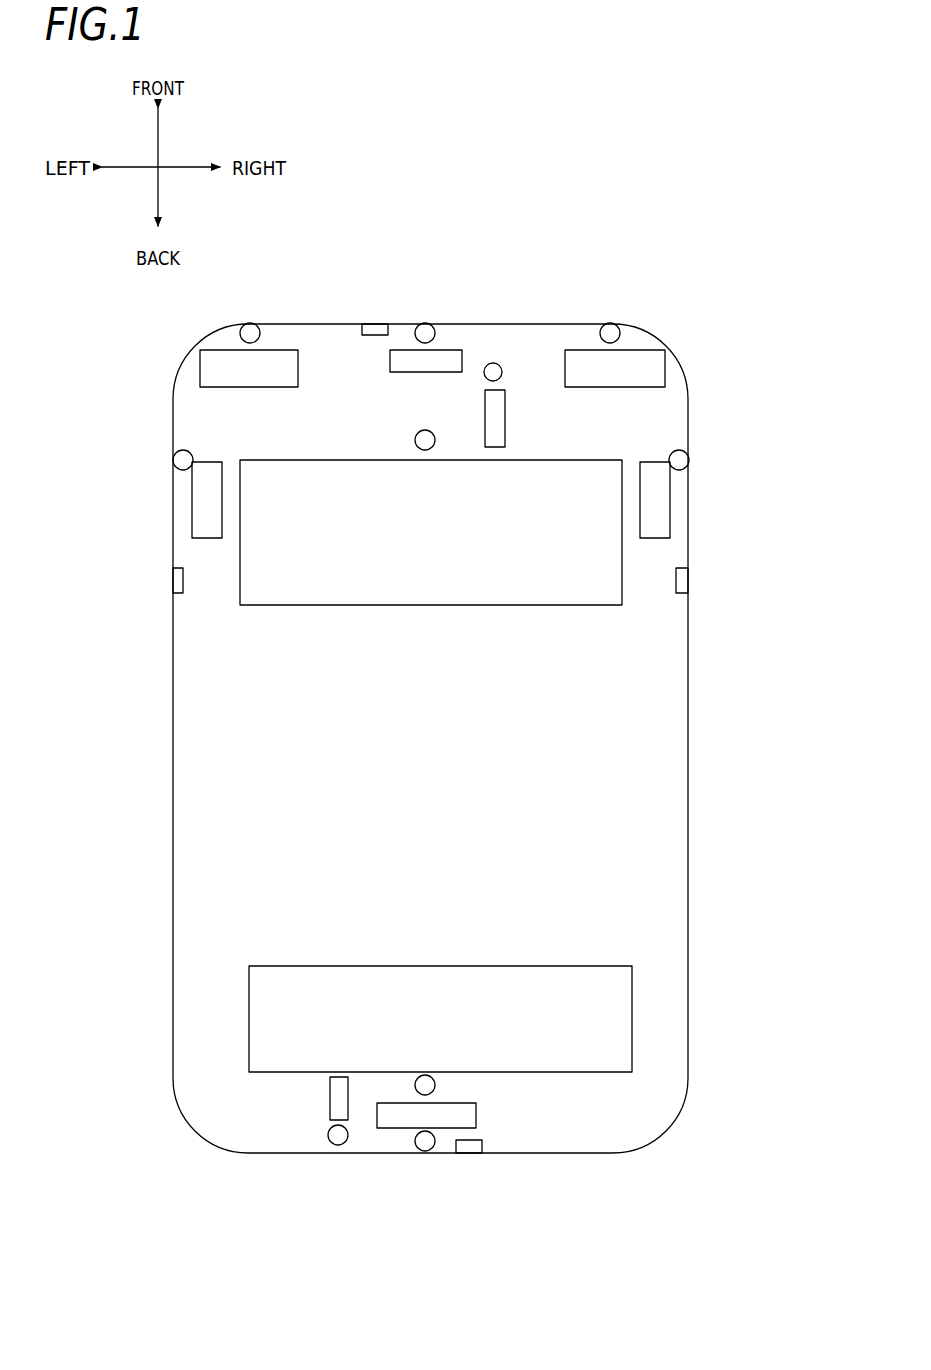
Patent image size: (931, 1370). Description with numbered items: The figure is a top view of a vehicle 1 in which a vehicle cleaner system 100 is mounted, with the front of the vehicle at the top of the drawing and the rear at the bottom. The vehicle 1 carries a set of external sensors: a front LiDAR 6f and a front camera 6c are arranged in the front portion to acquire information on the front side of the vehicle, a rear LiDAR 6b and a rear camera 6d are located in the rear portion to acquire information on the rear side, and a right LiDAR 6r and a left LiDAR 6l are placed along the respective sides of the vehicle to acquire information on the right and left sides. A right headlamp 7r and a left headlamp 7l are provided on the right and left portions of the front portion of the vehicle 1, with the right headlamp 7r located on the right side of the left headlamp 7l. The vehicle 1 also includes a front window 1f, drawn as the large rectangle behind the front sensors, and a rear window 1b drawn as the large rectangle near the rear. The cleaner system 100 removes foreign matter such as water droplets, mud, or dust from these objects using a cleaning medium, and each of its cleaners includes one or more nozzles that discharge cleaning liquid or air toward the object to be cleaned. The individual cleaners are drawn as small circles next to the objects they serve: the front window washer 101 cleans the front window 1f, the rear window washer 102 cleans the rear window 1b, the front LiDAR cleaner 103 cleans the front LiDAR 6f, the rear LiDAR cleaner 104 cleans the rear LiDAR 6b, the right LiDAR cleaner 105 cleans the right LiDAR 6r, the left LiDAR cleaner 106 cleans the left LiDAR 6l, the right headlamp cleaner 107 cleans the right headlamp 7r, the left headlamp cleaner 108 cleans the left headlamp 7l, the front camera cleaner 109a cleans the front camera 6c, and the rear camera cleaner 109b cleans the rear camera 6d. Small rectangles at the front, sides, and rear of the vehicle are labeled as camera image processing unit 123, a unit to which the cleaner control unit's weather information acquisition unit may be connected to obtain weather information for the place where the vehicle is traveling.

The vehicle 1 is at (607, 157).
The vehicle cleaner system 100 is at (496, 233).
The front window 1f is at (612, 553).
The rear window 1b is at (622, 1010).
The front window washer 101 is at (418, 433).
The rear window washer 102 is at (437, 1085).
The front LiDAR cleaner 103 is at (422, 324).
The rear LiDAR cleaner 104 is at (425, 1153).
The right LiDAR cleaner 105 is at (682, 458).
The left LiDAR cleaner 106 is at (180, 452).
The right headlamp cleaner 107 is at (612, 324).
The left headlamp cleaner 108 is at (248, 322).
The front camera cleaner 109a is at (493, 362).
The rear camera cleaner 109b is at (332, 1143).
The front LiDAR 6f is at (459, 350).
The front camera 6c is at (503, 412).
The left LiDAR 6l is at (200, 495).
The right LiDAR 6r is at (665, 500).
The rear camera 6d is at (335, 1098).
The rear LiDAR 6b is at (390, 1120).
The left headlamp 7l is at (205, 365).
The right headlamp 7r is at (642, 362).
The camera image processing unit 123 is at (375, 324).